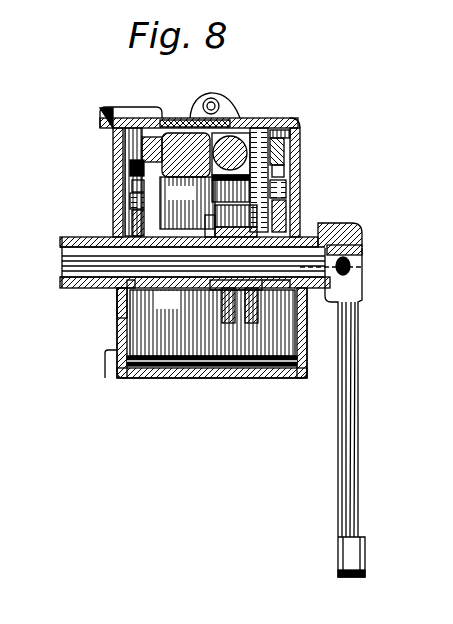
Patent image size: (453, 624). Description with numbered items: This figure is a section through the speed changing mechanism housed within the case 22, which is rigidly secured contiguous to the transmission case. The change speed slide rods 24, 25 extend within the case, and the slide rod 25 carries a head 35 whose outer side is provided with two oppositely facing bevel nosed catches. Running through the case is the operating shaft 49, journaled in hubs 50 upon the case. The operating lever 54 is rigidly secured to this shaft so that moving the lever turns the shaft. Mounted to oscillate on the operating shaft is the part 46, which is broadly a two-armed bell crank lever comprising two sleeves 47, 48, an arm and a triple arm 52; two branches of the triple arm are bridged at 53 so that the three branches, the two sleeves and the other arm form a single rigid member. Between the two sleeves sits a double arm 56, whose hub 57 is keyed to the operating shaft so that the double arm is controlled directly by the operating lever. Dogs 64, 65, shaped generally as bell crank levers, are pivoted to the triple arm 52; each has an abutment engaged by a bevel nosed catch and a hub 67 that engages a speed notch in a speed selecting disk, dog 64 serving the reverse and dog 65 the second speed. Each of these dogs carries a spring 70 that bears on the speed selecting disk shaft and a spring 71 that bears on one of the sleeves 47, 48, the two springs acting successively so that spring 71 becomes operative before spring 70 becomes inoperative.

The case 22 is at (283, 286).
The change speed slide rod 24 is at (222, 143).
The change speed slide rod 25 is at (136, 146).
The head 35 is at (167, 131).
The two-armed bell crank lever 46 is at (130, 284).
The sleeve 47 is at (128, 302).
The sleeve 48 is at (278, 287).
The operating shaft 49 is at (72, 263).
The hub 50 is at (80, 240).
The triple arm 52 is at (187, 181).
The bridge 53 is at (240, 208).
The operating lever 54 is at (347, 433).
The double arm 56 is at (236, 316).
The hub 57 is at (220, 230).
The dog 64 is at (278, 137).
The dog 65 is at (133, 168).
The hub 67 is at (288, 188).
The spring 70 is at (284, 168).
The spring 71 is at (285, 215).